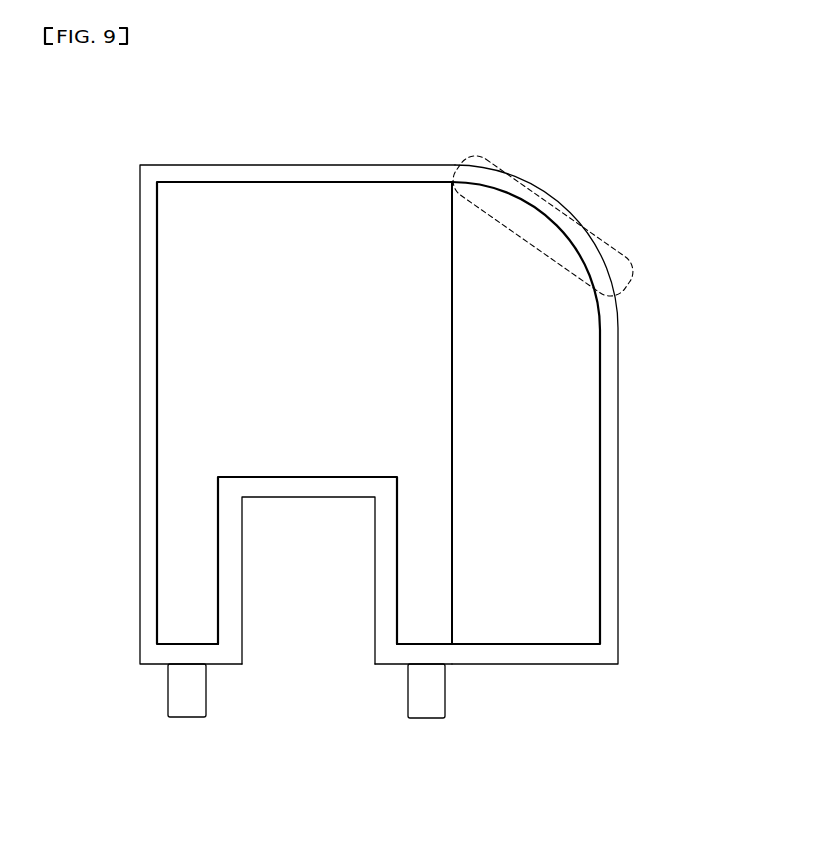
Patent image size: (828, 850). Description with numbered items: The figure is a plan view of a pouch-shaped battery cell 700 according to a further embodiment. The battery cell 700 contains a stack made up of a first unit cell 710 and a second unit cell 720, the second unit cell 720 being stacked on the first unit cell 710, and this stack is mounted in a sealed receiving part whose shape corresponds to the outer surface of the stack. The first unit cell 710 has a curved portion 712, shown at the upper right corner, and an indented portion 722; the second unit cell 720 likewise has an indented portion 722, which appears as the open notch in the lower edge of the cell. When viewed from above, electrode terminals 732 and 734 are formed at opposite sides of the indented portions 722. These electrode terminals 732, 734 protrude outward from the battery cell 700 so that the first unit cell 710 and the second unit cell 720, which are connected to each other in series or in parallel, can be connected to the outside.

The battery cell 700 is at (112, 138).
The first unit cell 710 is at (575, 413).
The curved portion 712 is at (592, 218).
The second unit cell 720 is at (202, 368).
The indented portion 722 is at (310, 634).
The electrode terminal 732 is at (187, 698).
The electrode terminal 734 is at (432, 708).